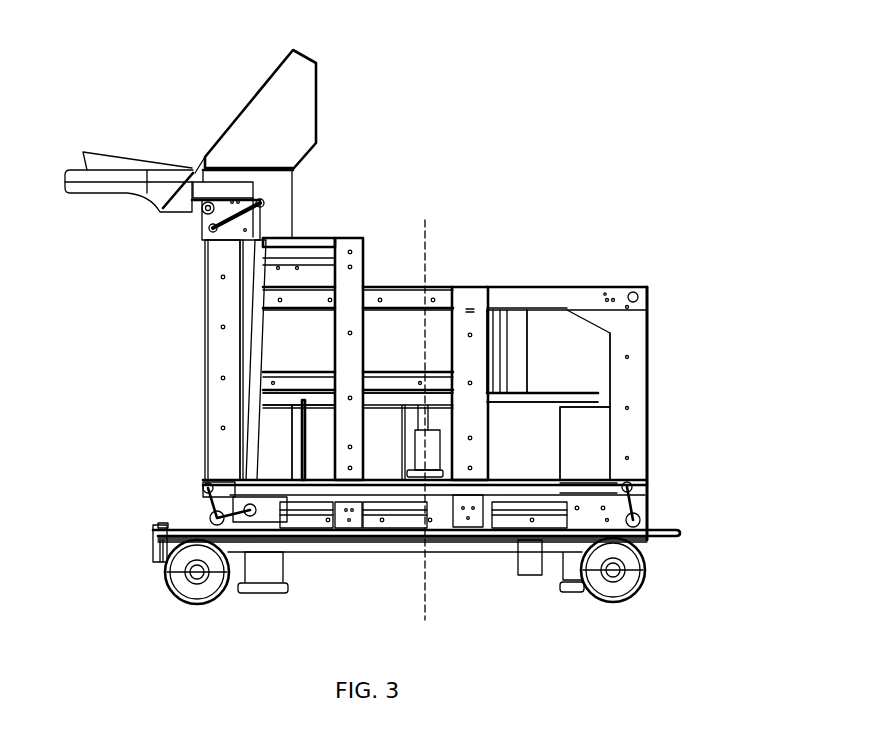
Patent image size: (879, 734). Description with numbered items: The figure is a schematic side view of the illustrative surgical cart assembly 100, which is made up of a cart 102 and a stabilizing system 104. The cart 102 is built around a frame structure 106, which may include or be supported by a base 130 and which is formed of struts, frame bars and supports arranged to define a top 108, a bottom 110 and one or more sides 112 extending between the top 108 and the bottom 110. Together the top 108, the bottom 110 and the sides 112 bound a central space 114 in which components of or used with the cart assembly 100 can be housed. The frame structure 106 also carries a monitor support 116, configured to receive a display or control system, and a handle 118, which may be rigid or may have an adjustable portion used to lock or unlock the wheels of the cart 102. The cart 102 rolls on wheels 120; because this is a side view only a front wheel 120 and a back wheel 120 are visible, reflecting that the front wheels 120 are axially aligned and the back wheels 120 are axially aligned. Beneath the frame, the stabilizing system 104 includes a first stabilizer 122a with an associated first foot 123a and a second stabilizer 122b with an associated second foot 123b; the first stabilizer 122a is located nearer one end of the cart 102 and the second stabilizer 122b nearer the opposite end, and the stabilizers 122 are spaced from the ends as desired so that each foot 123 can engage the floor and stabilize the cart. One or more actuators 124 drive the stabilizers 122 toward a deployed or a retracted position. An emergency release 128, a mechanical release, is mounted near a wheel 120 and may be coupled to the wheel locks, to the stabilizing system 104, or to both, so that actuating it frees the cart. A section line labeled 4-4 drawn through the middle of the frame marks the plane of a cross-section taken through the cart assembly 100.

The cart assembly 100 is at (790, 81).
The cart 102 is at (469, 385).
The stabilizing system 104 is at (402, 594).
The frame structure 106 is at (658, 413).
The top 108 is at (562, 210).
The bottom 110 is at (402, 577).
The side 112 is at (202, 360).
The central space 114 is at (554, 326).
The monitor support 116 is at (275, 140).
The handle 118 is at (136, 181).
The wheel 120 is at (406, 581).
The stabilizer 122 is at (425, 416).
The first stabilizer 122a is at (236, 442).
The second stabilizer 122b is at (634, 443).
The foot 123 is at (402, 577).
The first foot 123a is at (287, 613).
The second foot 123b is at (548, 605).
The actuator 124 is at (469, 441).
The emergency release 128 is at (126, 549).
The base 130 is at (448, 533).
The section line 4- 4 is at (445, 421).